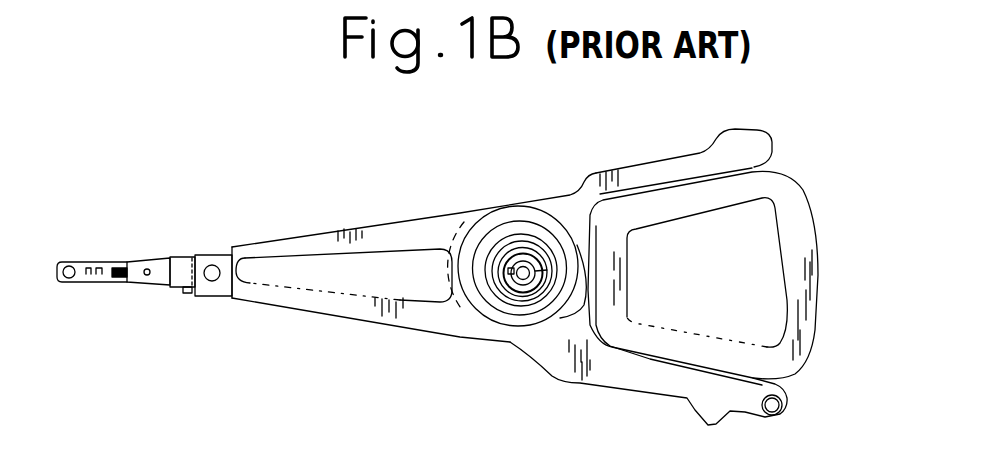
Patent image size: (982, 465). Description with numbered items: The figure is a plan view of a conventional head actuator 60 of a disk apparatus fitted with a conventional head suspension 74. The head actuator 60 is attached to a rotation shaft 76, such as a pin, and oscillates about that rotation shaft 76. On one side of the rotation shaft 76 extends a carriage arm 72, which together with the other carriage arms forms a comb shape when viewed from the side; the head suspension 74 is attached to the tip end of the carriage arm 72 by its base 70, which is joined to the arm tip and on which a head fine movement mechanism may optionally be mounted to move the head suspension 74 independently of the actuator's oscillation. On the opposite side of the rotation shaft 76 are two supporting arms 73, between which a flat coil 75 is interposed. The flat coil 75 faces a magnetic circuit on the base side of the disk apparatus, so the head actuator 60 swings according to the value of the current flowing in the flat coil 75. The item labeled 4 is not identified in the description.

The head actuator 60 is at (360, 191).
The base 70 is at (174, 296).
The carriage arm 72 is at (418, 220).
The supporting arm 73 is at (667, 165).
The head suspension 74 is at (112, 262).
The flat coil 75 is at (795, 245).
The rotation shaft 76 is at (525, 273).
The suspension 4 is at (367, 332).